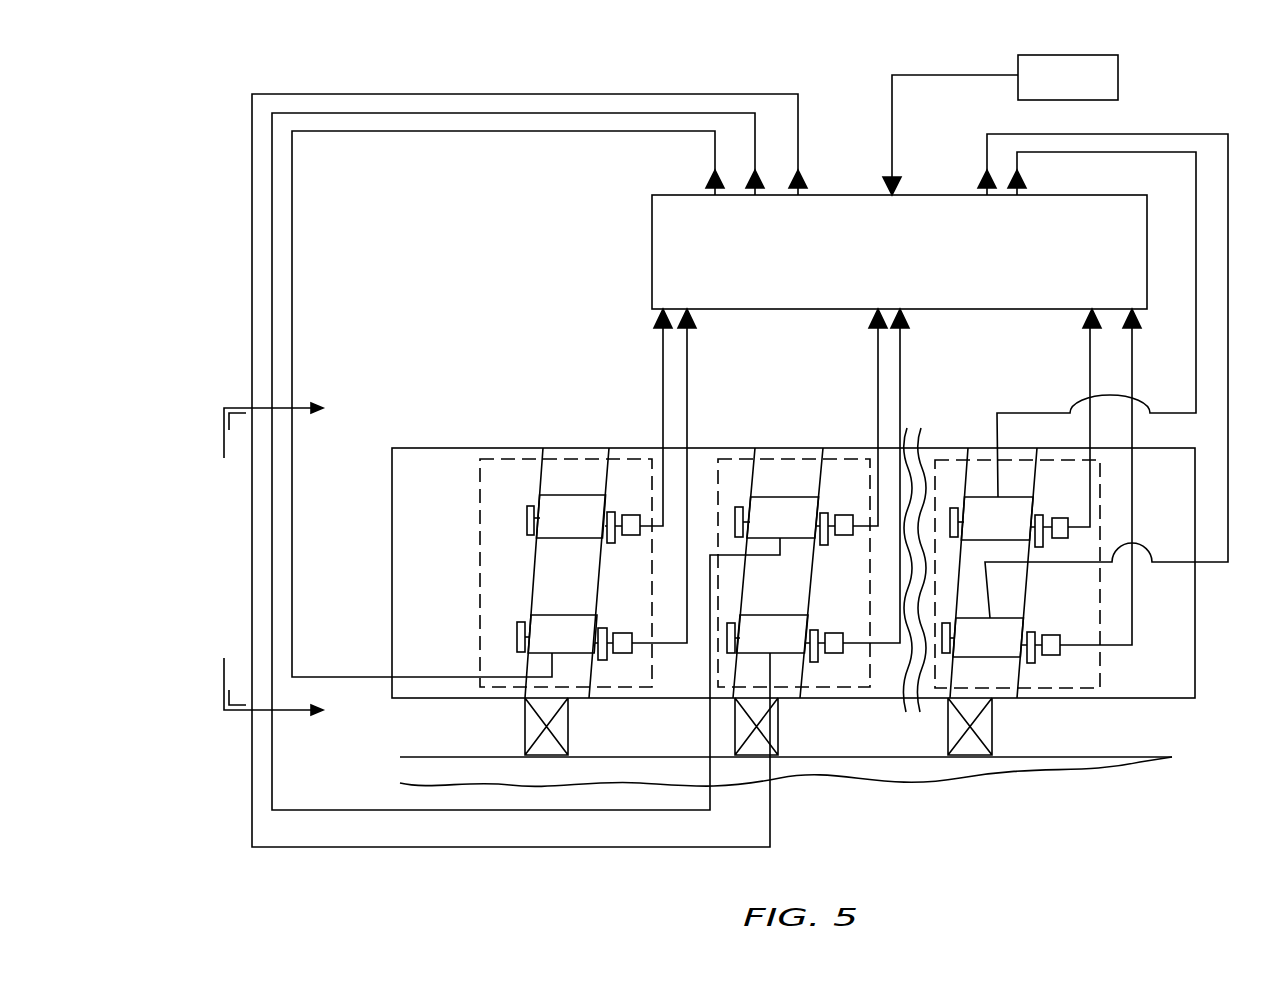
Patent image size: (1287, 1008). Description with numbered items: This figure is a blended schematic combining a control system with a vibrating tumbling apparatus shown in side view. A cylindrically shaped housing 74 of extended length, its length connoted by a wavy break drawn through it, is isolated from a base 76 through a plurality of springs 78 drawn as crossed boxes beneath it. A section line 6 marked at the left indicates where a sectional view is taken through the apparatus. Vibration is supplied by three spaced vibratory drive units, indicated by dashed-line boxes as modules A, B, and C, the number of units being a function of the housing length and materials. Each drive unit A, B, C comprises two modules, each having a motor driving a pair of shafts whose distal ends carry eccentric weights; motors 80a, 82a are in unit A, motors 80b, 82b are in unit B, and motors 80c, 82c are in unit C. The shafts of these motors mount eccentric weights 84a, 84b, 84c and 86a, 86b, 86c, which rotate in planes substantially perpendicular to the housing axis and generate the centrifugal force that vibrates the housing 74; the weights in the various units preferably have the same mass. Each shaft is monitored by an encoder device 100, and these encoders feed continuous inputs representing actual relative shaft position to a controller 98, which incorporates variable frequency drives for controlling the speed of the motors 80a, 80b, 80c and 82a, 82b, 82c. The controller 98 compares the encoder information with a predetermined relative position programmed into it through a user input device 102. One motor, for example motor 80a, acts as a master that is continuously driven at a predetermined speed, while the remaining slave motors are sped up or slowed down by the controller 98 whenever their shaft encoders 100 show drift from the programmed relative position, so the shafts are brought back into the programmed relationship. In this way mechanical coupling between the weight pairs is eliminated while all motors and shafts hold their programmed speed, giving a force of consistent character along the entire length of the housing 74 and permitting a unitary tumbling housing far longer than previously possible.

The section line 6- 6 is at (280, 547).
The housing 74 is at (427, 447).
The base 76 is at (1157, 758).
The springs 78 is at (993, 725).
The motor 80a is at (557, 532).
The motor 80b is at (783, 497).
The motor 80c is at (1015, 500).
The motor 82a is at (543, 617).
The motor 82b is at (777, 617).
The motor 82c is at (1002, 618).
The eccentric weight 84a is at (527, 518).
The eccentric weight 84b is at (738, 507).
The eccentric weight 84c is at (953, 508).
The eccentric weight 86a is at (517, 632).
The eccentric weight 86b is at (727, 640).
The eccentric weight 86c is at (943, 643).
The controller 98 is at (1122, 196).
The encoder devices 100 is at (1060, 538).
The user input device 102 is at (1120, 80).
The drive unit A is at (493, 448).
The drive unit B is at (847, 462).
The drive unit C is at (938, 455).